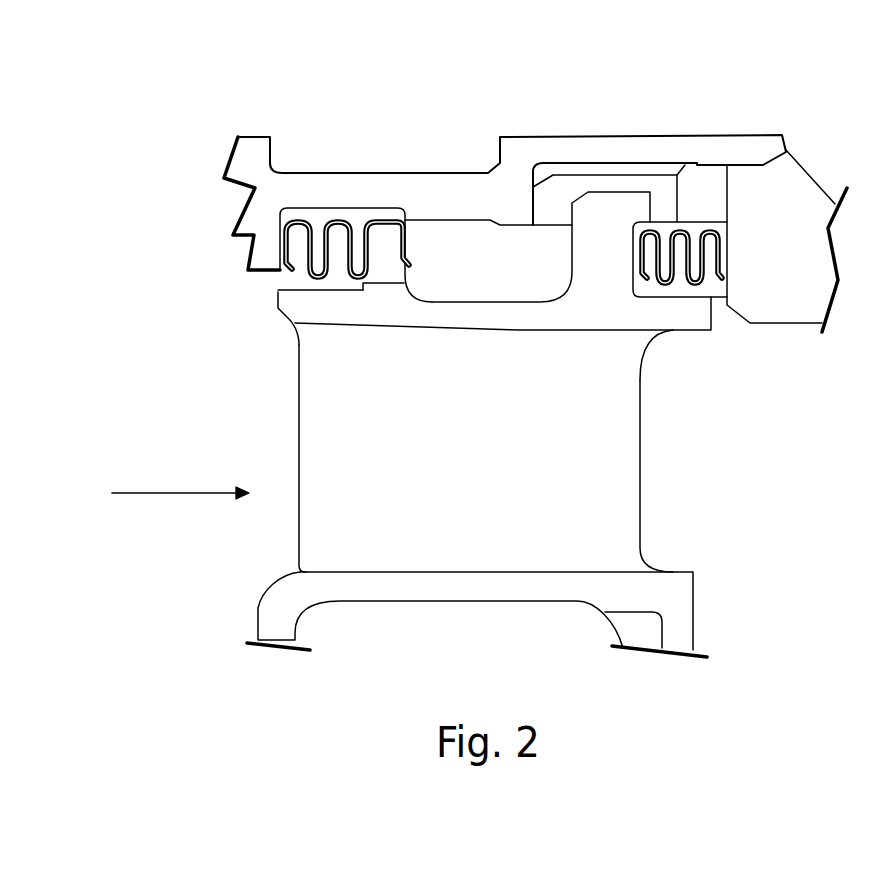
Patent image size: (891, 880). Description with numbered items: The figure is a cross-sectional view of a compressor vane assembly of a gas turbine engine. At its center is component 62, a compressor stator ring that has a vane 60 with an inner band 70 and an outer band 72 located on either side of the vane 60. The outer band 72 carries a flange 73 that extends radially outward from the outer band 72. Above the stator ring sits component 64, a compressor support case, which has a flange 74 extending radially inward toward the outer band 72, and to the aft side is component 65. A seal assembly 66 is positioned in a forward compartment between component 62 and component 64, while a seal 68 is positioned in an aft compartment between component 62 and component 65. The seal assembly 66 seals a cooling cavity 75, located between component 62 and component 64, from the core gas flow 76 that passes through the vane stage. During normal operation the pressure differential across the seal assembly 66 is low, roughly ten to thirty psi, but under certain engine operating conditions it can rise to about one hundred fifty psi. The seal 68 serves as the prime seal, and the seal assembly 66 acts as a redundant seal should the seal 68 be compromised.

The vane 60 is at (501, 502).
The component 62 is at (274, 376).
The component 64 is at (246, 193).
The component 65 is at (797, 271).
The seal assembly 66 is at (344, 212).
The seal 68 is at (712, 238).
The inner band 70 is at (446, 600).
The outer band 72 is at (526, 328).
The flange 73 is at (385, 255).
The flange 74 is at (270, 245).
The cooling cavity 75 is at (494, 265).
The core gas flow 76 is at (188, 493).